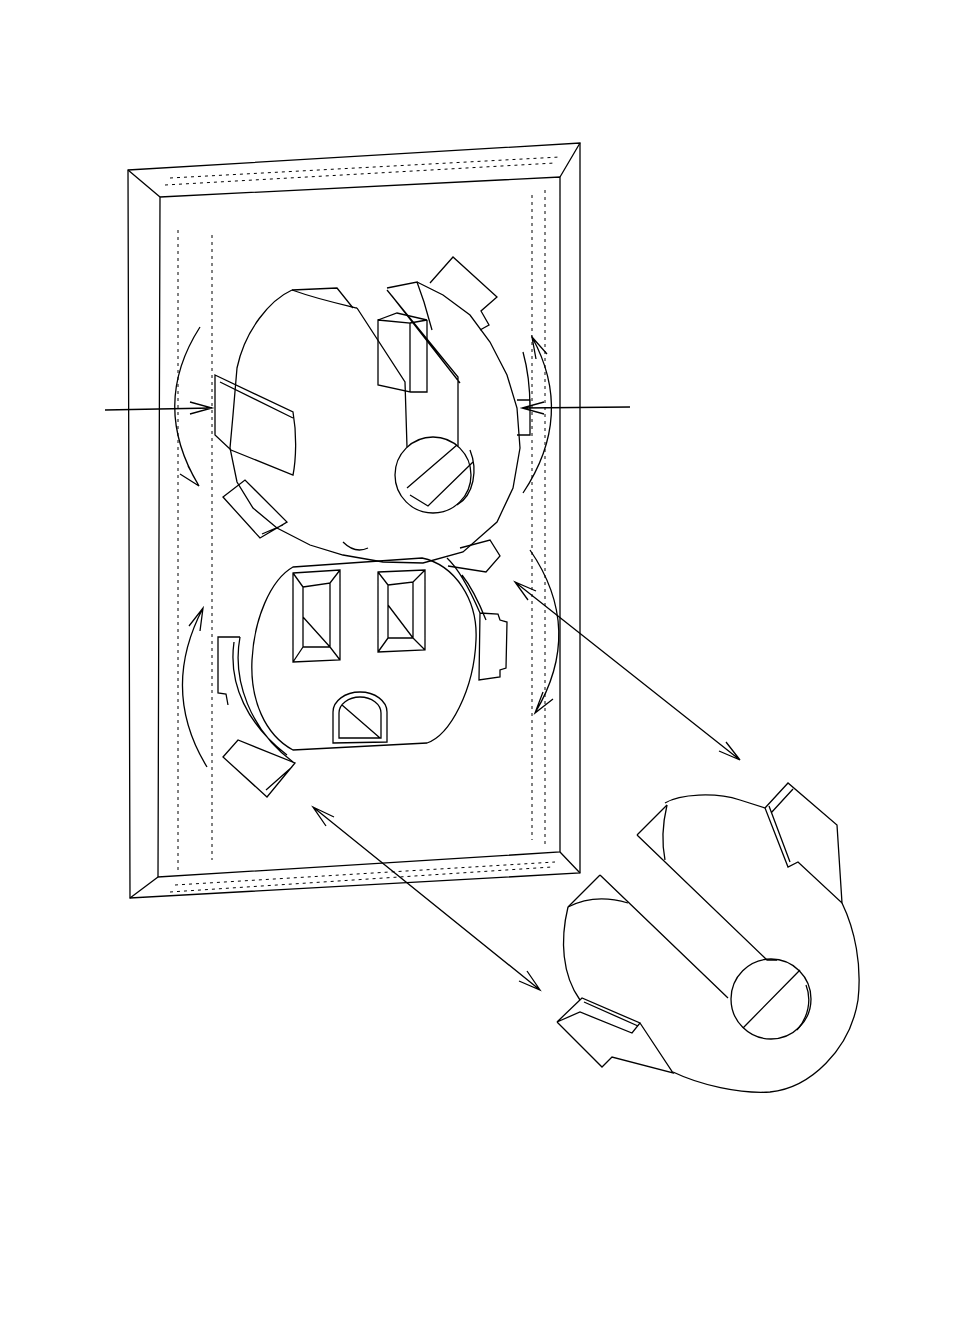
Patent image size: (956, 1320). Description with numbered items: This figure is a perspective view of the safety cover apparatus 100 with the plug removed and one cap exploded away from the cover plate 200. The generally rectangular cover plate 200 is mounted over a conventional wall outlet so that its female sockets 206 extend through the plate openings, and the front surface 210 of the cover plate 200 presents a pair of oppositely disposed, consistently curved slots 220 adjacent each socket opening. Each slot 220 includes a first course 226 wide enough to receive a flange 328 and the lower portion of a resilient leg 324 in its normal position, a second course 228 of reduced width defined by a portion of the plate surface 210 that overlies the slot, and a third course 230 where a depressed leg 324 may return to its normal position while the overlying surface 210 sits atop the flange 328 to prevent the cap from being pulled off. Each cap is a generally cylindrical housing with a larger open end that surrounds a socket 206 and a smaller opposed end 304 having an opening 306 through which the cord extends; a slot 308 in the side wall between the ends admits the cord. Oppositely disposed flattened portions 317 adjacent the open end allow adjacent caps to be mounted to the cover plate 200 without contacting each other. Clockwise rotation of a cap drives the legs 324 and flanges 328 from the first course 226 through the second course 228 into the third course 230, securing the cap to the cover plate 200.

The safety cover apparatus 100 is at (270, 55).
The cover plate 200 is at (372, 122).
The front surface 210 is at (200, 252).
The female socket 206 is at (400, 723).
The slot 220 is at (460, 263).
The first course/channel 226 is at (462, 287).
The second course/channel portion 228 is at (237, 717).
The third course/channel 230 is at (222, 660).
The opposed end 304 is at (480, 508).
The opening 306 is at (778, 1017).
The slot 308 is at (532, 358).
The flattened portion 317 is at (312, 292).
The resilient leg 324 is at (262, 417).
The foot/flange 328 is at (793, 793).